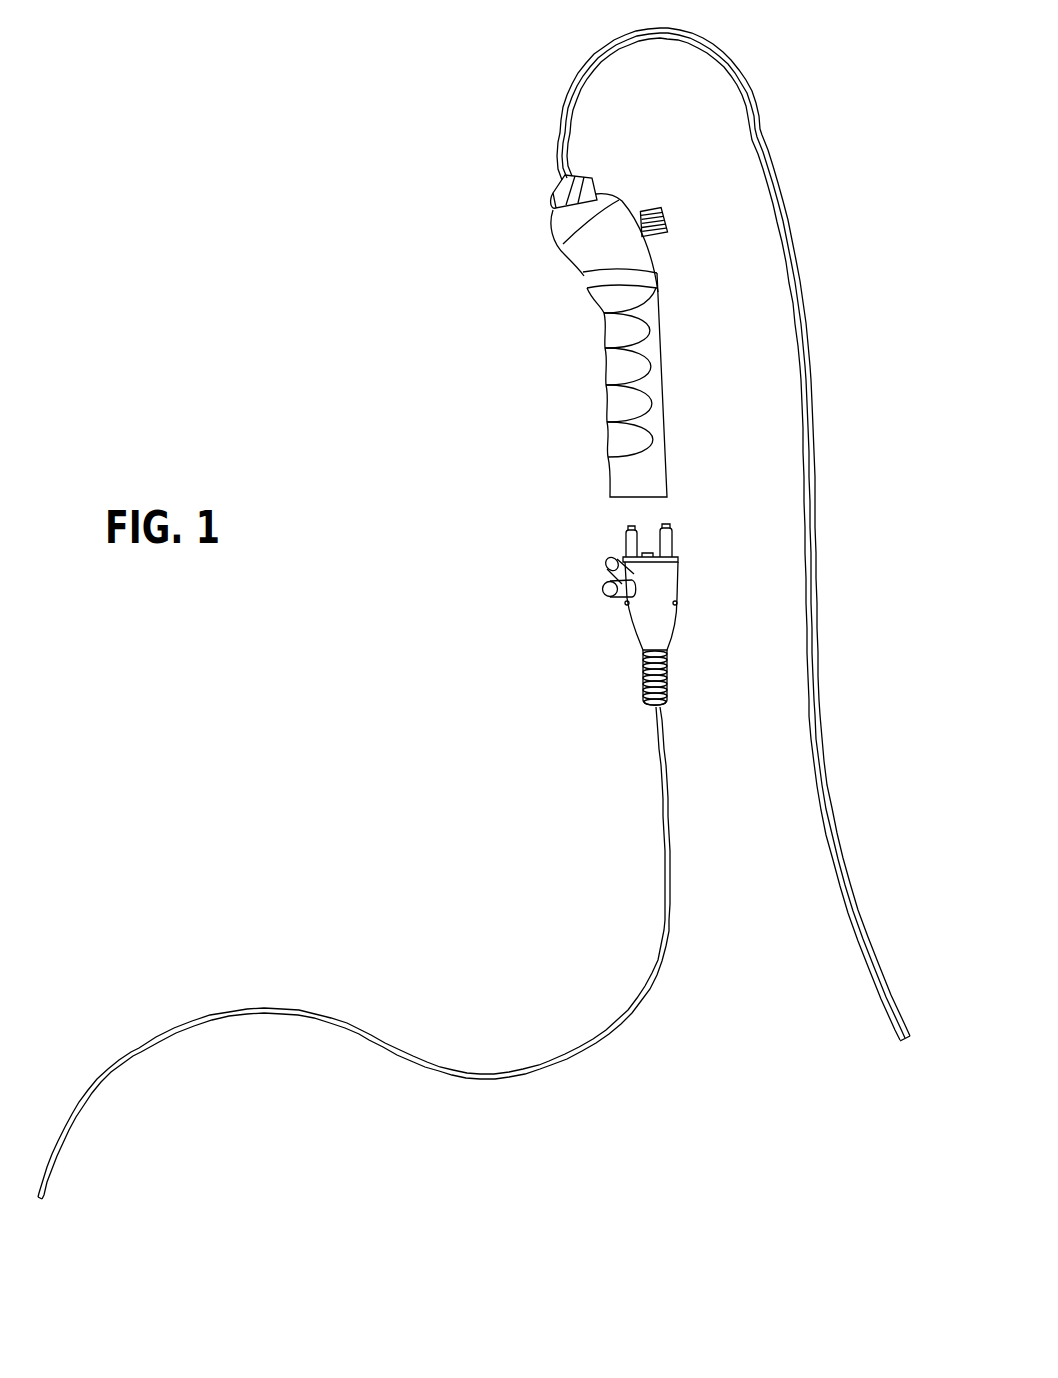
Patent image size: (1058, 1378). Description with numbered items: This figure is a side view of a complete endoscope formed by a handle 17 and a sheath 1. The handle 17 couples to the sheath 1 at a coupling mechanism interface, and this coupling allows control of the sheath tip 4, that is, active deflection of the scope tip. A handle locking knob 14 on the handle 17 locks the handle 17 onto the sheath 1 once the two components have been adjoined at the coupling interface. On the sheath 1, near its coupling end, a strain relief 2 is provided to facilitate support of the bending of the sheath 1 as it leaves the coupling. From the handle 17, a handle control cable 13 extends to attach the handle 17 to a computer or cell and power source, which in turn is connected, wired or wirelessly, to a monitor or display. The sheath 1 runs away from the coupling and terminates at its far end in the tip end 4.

The sheath 1 is at (679, 590).
The strain relief 2 is at (668, 676).
The sheath tip 4 is at (42, 1205).
The handle control cable 13 is at (812, 365).
The handle locking knob 14 is at (597, 186).
The handle 17 is at (612, 358).